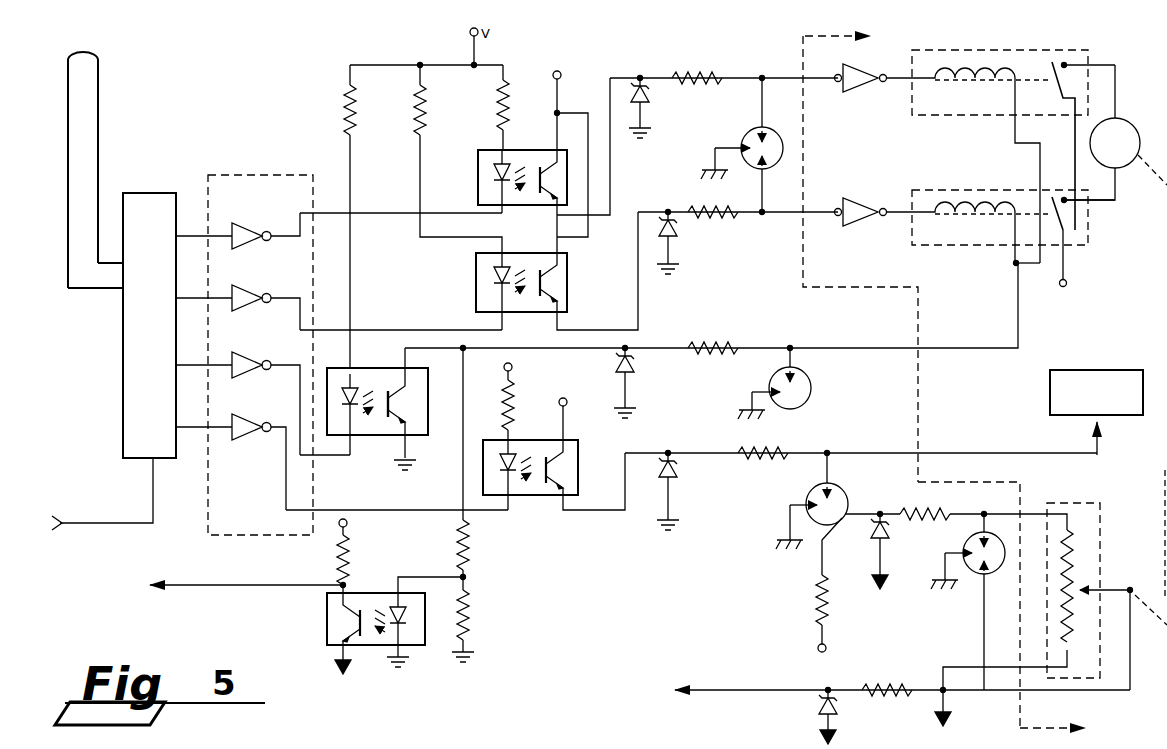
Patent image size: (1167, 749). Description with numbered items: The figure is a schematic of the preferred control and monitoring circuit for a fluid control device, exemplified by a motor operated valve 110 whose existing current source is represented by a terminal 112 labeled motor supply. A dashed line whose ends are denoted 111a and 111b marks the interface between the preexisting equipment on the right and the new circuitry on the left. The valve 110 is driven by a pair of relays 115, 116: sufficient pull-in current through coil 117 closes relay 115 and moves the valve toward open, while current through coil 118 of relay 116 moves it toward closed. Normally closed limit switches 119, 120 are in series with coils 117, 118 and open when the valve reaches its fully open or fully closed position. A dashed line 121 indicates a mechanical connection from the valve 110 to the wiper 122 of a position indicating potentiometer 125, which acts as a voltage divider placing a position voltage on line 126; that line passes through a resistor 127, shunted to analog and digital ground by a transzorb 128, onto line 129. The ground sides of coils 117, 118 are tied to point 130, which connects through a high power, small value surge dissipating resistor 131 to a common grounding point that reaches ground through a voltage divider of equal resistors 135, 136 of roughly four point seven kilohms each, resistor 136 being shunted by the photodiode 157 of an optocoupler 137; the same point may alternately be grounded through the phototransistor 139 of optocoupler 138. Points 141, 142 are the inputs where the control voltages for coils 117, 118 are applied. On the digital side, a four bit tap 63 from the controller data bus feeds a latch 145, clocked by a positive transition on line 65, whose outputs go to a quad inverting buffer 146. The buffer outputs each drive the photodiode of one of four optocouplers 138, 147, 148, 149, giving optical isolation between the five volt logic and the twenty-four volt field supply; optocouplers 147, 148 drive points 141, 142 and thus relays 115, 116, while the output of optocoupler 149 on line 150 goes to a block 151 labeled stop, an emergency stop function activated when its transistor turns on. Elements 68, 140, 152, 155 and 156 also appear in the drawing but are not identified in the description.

The four bit tap 63 is at (100, 121).
The line 65 is at (150, 493).
The output line to FIG 4 68 is at (278, 585).
The motor operated valve 110 is at (1133, 128).
The dashed line end 111a is at (828, 34).
The dashed line end 111b is at (1050, 728).
The terminal 112 is at (1068, 283).
The relay 115 is at (1010, 146).
The relay 116 is at (1010, 218).
The coil 117 is at (978, 89).
The coil 118 is at (975, 225).
The limit switch 119 is at (855, 89).
The limit switch 120 is at (855, 223).
The dashed line 121 is at (1166, 255).
The wiper 122 is at (1116, 590).
The potentiometer 125 is at (1053, 593).
The line 126 is at (1130, 632).
The resistor 127 is at (885, 690).
The transzorb 128 is at (842, 712).
The line 129 is at (752, 690).
The point 130 is at (1014, 264).
The high power small value resistor 131 is at (725, 348).
The resistor 135 is at (470, 548).
The resistor 136 is at (470, 607).
The optocoupler 137 is at (362, 595).
The optocoupler 138 is at (370, 437).
The phototransistor 139 is at (393, 408).
The optical isolator 140 is at (356, 390).
The point 141 is at (762, 76).
The point 142 is at (762, 215).
The latch 145 is at (158, 193).
The quad inverting buffer 146 is at (258, 175).
The optocoupler 147 is at (478, 167).
The optocoupler 148 is at (476, 282).
The optocoupler 149 is at (580, 473).
The line 150 is at (668, 452).
The block 151 is at (1115, 370).
The inverter output line 152 is at (327, 457).
The open signal line 155 is at (386, 213).
The close signal line 156 is at (405, 330).
The photodiode 157 is at (425, 617).